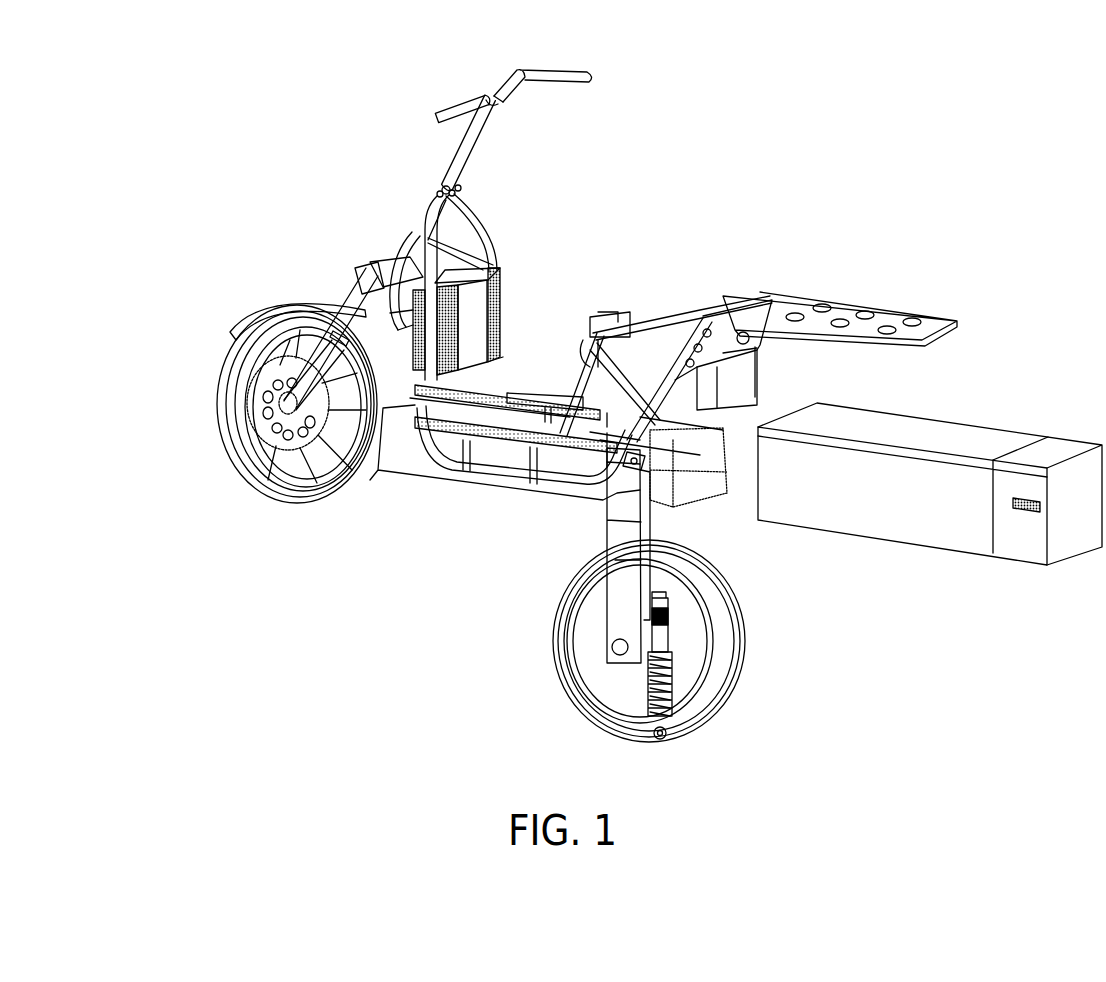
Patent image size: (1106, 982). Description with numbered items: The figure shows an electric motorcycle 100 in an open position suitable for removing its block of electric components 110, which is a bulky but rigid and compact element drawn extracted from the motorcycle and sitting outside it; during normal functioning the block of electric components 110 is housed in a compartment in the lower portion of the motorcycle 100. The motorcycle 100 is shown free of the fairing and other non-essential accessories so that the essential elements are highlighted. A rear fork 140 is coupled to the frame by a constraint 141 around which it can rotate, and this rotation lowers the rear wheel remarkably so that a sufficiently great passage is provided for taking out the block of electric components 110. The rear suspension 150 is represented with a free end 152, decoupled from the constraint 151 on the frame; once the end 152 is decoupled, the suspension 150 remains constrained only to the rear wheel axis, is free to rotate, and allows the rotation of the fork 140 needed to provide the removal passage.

The electric motorcycle 100 is at (587, 406).
The block of electric components 110 is at (867, 426).
The rear fork 140 is at (624, 586).
The constraint 141 is at (634, 466).
The rear suspension 150 is at (680, 663).
The constraint 151 is at (750, 332).
The free end 152 is at (672, 733).